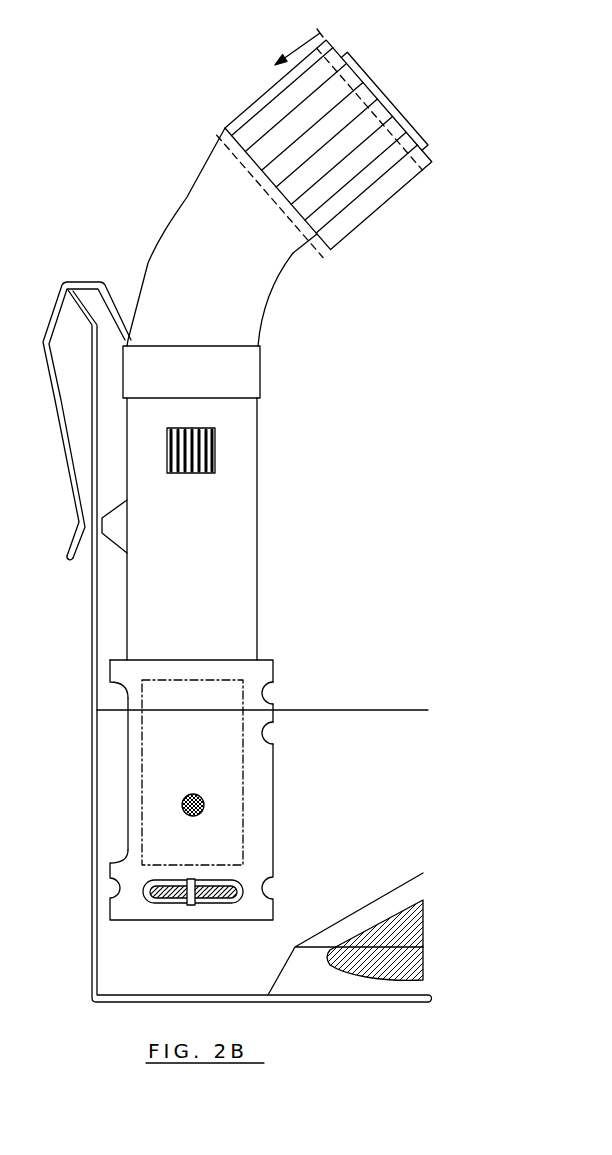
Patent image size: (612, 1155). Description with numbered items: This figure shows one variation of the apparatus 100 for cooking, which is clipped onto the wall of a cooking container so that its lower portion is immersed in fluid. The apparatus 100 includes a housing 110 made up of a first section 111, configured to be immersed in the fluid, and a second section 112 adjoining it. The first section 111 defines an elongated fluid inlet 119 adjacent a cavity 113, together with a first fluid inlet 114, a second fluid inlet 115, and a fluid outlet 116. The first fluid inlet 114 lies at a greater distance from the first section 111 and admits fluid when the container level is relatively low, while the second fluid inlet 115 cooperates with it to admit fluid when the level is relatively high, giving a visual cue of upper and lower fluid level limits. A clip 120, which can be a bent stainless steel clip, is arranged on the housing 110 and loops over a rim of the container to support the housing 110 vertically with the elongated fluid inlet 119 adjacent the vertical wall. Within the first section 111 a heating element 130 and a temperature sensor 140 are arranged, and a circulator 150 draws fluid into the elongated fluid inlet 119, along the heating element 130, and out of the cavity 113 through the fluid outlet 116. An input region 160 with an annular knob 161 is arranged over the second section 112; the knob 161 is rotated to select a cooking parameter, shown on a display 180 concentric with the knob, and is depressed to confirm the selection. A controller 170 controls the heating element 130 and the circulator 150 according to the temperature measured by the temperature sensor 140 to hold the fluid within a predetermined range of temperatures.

The apparatus 100 is at (121, 73).
The housing 110 is at (238, 488).
The first section 111 is at (265, 797).
The second section 112 is at (244, 545).
The cavity 113 is at (268, 849).
The first fluid inlet 114 is at (267, 733).
The second fluid inlet 115 is at (267, 690).
The fluid outlet 116 is at (160, 904).
The elongated fluid inlet 119 is at (128, 722).
The clip 120 is at (57, 303).
The heating element 130 is at (158, 748).
The temperature sensor 140 is at (182, 804).
The circulator 150 is at (148, 893).
The input region 160 is at (342, 205).
The annular knob 161 is at (341, 155).
The controller 170 is at (215, 450).
The display 180 is at (372, 80).